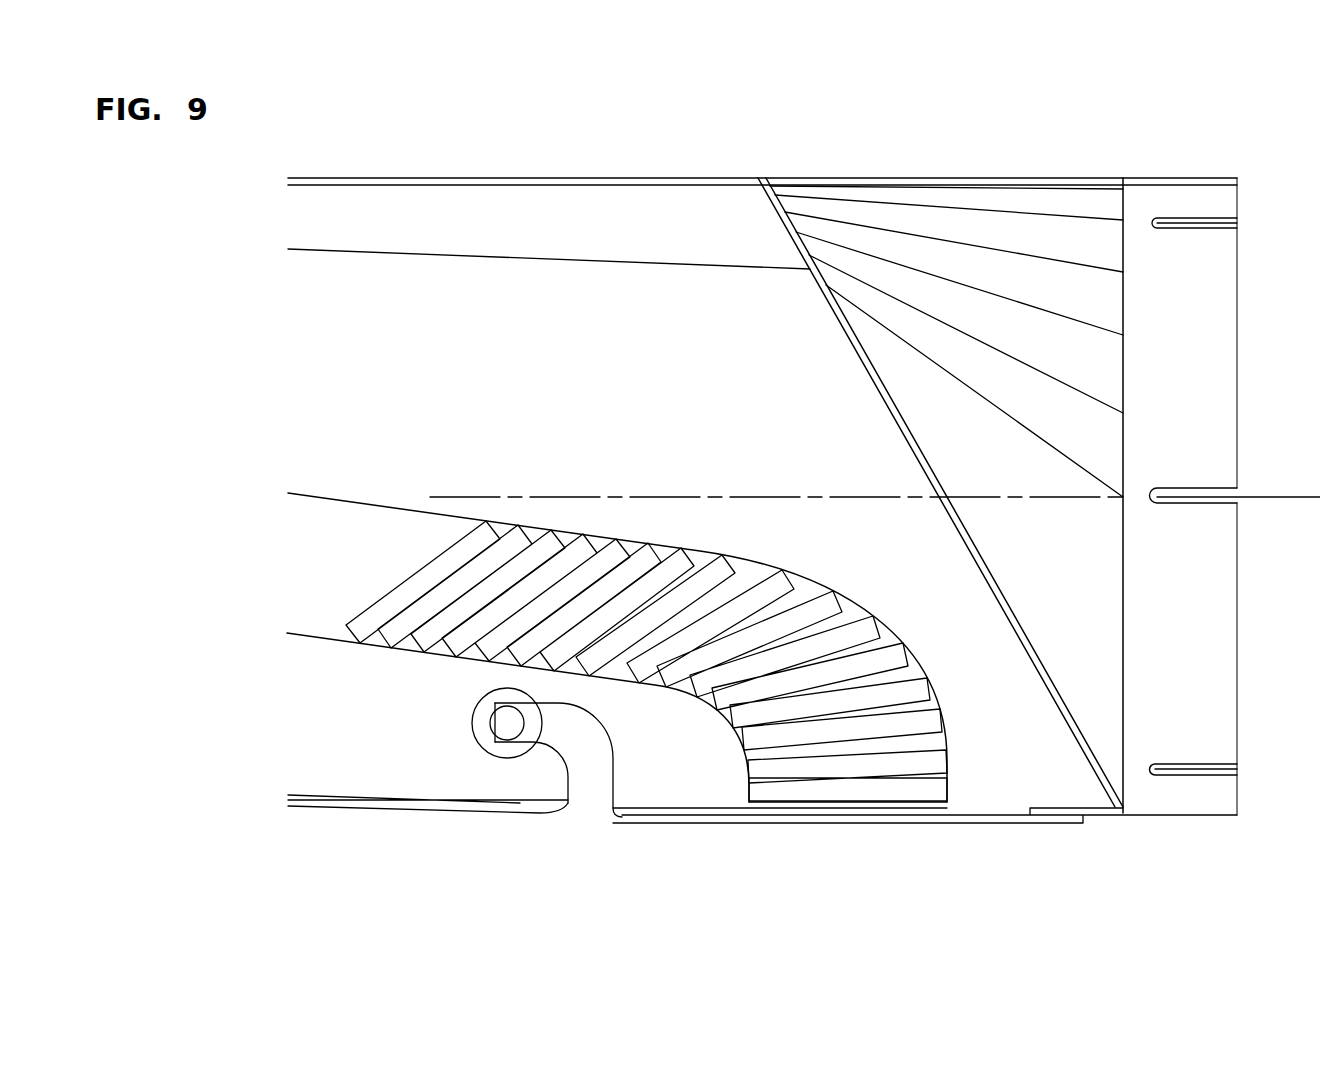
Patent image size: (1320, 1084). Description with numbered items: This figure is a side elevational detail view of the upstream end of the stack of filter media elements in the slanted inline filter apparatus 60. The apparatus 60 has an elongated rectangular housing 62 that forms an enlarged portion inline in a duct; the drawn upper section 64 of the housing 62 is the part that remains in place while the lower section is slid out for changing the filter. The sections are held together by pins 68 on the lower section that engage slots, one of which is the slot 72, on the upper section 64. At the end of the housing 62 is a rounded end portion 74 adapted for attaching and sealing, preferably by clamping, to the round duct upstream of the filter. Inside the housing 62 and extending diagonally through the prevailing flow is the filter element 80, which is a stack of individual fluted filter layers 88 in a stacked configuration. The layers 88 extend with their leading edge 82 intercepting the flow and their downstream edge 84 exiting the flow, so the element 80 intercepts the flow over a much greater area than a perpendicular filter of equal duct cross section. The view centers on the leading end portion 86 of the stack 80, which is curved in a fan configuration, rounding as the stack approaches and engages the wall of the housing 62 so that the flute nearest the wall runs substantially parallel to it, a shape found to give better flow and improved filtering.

The slanted inline filter apparatus 60 is at (916, 154).
The elongated rectangular housing 62 is at (672, 178).
The upper section 64 is at (437, 213).
The pins 68 is at (505, 725).
The slot 72 is at (613, 782).
The rounded end portions 74 is at (1172, 183).
The filter element 80 is at (425, 510).
The leading edge 82 is at (847, 599).
The downstream edge 84 is at (722, 720).
The leading end portion 86 is at (933, 702).
The fluted filter layers 88 is at (438, 600).